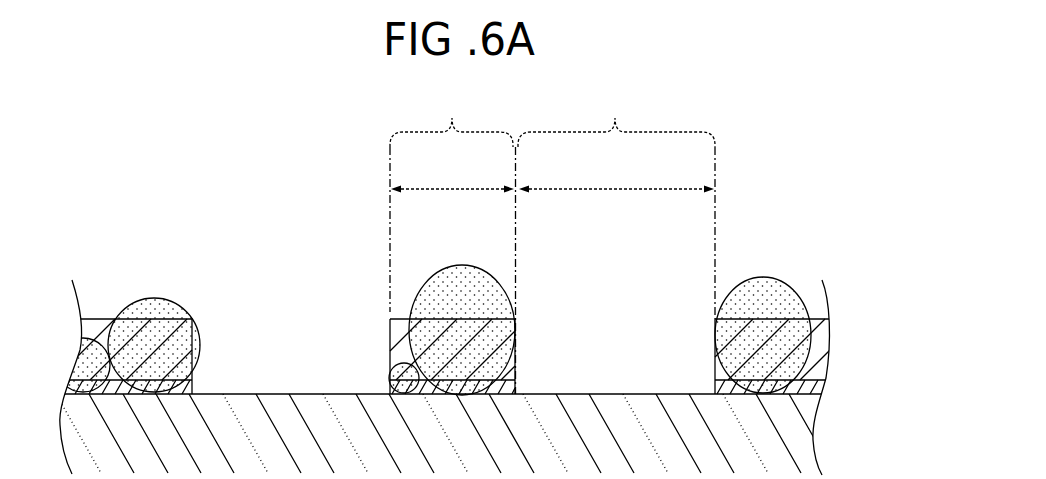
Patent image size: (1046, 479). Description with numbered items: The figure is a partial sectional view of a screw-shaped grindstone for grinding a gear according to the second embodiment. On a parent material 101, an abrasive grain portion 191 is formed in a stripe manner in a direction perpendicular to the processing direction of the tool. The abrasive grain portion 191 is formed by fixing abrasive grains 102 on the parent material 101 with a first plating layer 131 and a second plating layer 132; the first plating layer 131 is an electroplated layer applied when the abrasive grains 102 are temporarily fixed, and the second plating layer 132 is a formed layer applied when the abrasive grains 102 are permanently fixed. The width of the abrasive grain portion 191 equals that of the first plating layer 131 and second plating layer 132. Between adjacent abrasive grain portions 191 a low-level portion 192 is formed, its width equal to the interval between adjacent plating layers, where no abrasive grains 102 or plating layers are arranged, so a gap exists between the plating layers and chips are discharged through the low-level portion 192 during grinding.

The parent material 101 is at (810, 438).
The first plating layer 131 is at (813, 390).
The second plating layer 132 is at (822, 342).
The abrasive grains 102 is at (768, 278).
The abrasive grain portion 191 is at (453, 240).
The low-level portion 192 is at (616, 202).